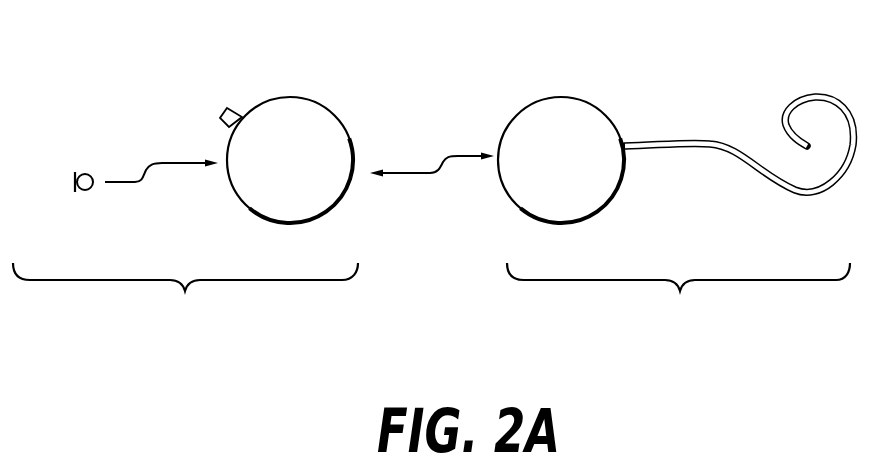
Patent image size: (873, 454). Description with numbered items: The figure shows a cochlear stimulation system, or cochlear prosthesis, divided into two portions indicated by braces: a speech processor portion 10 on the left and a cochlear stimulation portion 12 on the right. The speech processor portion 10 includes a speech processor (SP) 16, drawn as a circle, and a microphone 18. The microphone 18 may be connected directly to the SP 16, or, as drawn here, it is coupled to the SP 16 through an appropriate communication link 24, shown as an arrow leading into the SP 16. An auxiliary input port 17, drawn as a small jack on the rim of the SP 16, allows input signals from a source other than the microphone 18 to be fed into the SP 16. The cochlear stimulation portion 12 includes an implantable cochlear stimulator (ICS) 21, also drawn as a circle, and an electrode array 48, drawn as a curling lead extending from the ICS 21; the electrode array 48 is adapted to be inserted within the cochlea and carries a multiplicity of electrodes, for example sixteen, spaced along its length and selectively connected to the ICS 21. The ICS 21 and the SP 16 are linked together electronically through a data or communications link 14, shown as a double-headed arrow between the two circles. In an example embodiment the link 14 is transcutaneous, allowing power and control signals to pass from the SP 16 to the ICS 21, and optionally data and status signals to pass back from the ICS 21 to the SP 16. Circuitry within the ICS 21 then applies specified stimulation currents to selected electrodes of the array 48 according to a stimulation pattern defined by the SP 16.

The speech processor portion 10 is at (185, 291).
The cochlear stimulation portion 12 is at (680, 291).
The communications link 14 is at (455, 154).
The speech processor 16 is at (288, 98).
The auxiliary input port 17 is at (222, 110).
The microphone 18 is at (81, 173).
The implantable cochlear stimulator 21 is at (558, 97).
The communication link 24 is at (160, 162).
The electrode array 48 is at (808, 92).